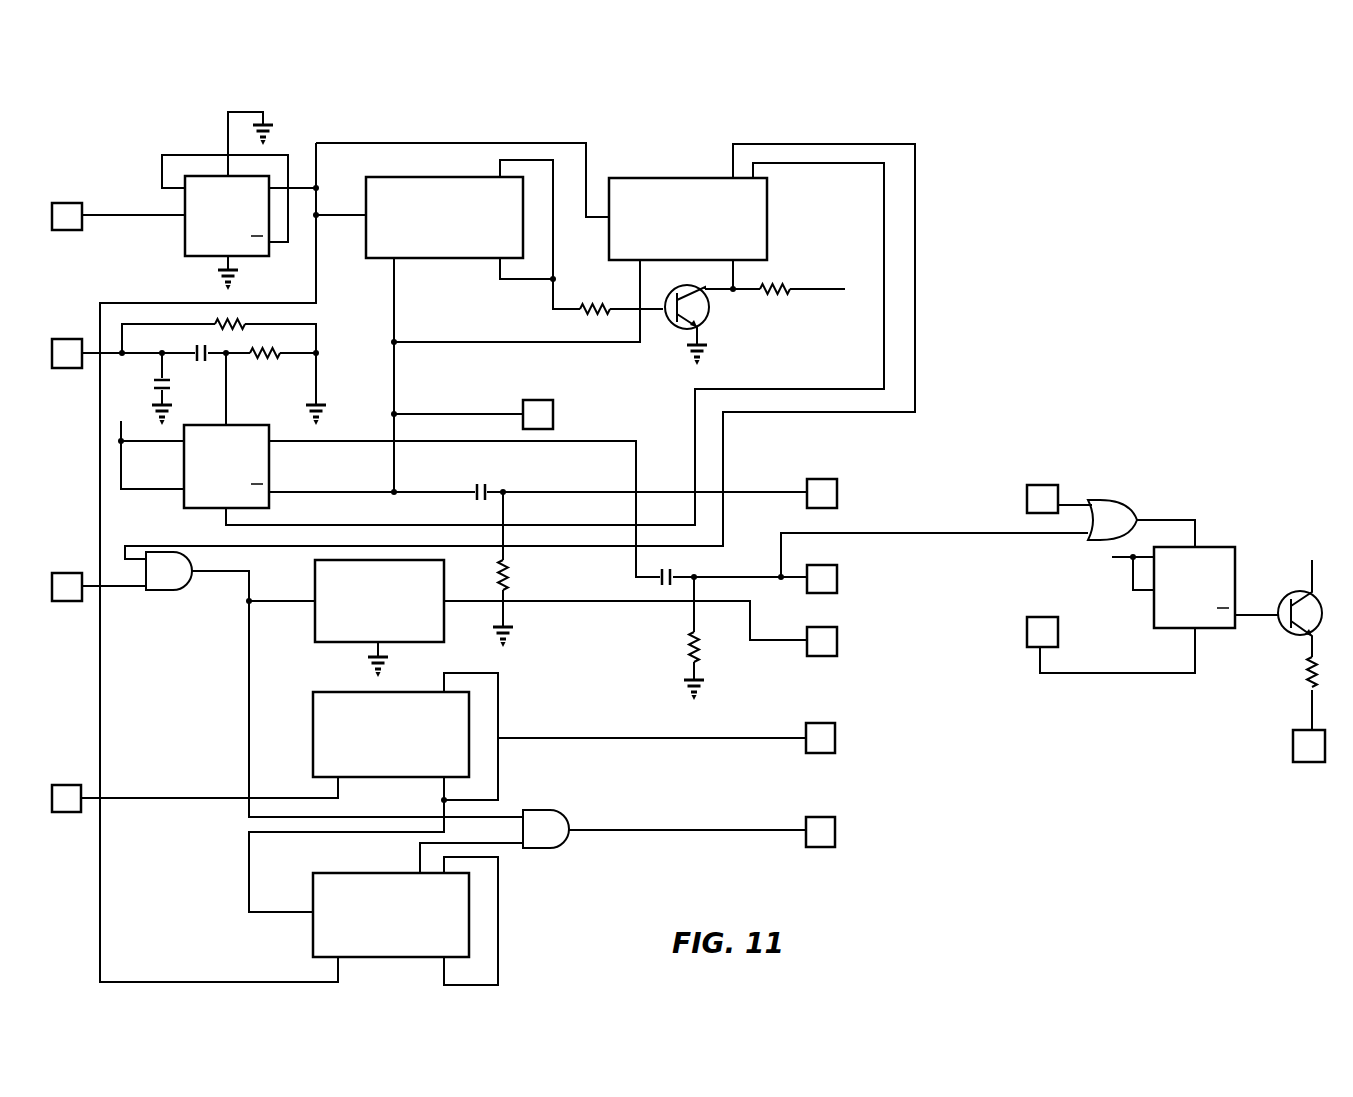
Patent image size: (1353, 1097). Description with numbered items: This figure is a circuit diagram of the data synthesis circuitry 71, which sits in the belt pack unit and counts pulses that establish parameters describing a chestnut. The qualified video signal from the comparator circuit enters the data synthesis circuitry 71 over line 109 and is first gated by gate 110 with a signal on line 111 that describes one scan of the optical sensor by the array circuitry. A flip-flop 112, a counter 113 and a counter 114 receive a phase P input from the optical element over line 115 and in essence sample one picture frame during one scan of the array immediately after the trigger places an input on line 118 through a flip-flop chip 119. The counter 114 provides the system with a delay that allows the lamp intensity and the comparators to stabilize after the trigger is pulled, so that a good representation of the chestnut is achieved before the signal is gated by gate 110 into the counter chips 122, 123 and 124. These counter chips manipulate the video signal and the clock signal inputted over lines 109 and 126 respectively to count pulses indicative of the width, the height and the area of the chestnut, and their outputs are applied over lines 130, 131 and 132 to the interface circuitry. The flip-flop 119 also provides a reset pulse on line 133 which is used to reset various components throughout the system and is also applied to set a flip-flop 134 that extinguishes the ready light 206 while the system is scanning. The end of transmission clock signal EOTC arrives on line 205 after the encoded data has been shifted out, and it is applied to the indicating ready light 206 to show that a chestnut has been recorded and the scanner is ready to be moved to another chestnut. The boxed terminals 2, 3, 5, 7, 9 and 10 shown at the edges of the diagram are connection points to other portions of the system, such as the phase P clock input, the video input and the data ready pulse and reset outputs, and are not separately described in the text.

The clock input terminal (from FIG. 8) 2 is at (67, 216).
The input terminal 3 is at (67, 353).
The phase V2 input terminal 5 is at (66, 798).
The data ready pulse output terminal 7 is at (822, 493).
The video input terminal (from FIG. 10) 9 is at (67, 587).
The reset 1 output terminal 10 is at (822, 579).
The data synthesis circuitry 71 is at (678, 548).
The line 109 is at (130, 590).
The gate 110 is at (178, 580).
The line 111 is at (263, 546).
The flip-flop 112 is at (258, 256).
The counter 113 is at (440, 258).
The counter 114 is at (767, 225).
The line 115 is at (108, 218).
The line 118 is at (122, 356).
The flip-flop chip 119 is at (256, 424).
The counter chip 122 is at (444, 578).
The counter chip 123 is at (318, 690).
The counter chip 124 is at (316, 872).
The line 126 is at (187, 797).
The line 130 is at (776, 639).
The line 131 is at (757, 736).
The line 132 is at (755, 830).
The line 133 is at (794, 576).
The flip-flop 134 is at (1224, 547).
The line 205 is at (1097, 672).
The ready light 206 is at (1290, 737).